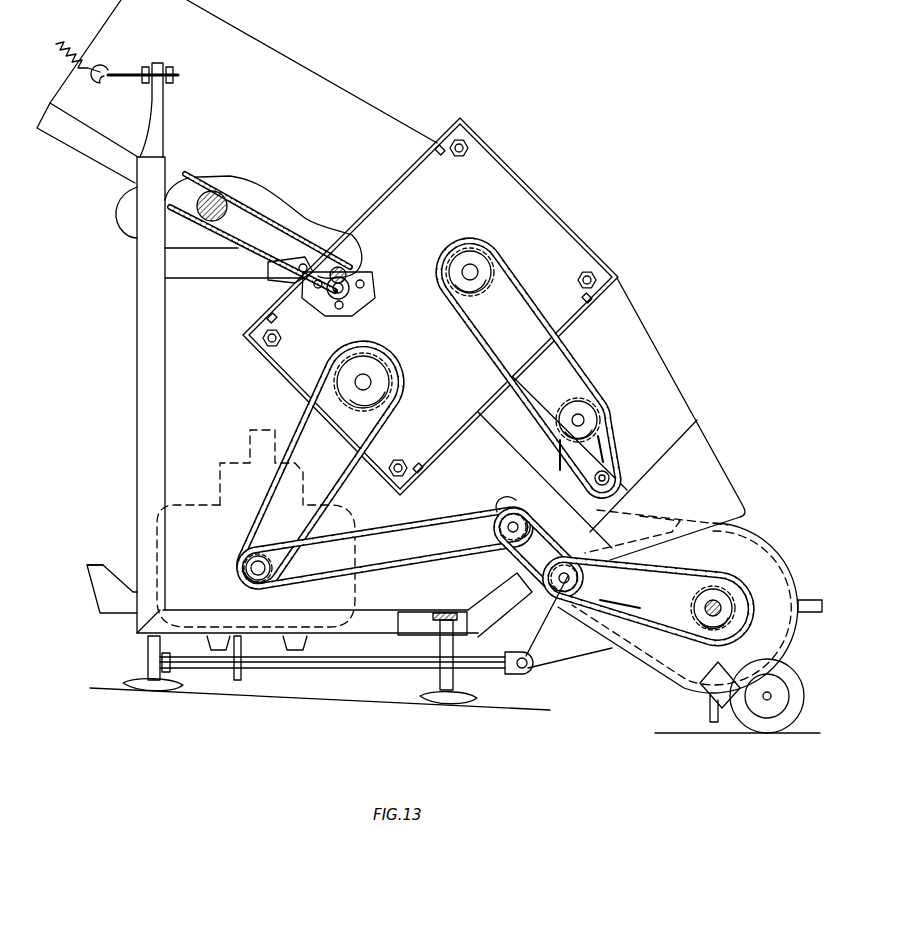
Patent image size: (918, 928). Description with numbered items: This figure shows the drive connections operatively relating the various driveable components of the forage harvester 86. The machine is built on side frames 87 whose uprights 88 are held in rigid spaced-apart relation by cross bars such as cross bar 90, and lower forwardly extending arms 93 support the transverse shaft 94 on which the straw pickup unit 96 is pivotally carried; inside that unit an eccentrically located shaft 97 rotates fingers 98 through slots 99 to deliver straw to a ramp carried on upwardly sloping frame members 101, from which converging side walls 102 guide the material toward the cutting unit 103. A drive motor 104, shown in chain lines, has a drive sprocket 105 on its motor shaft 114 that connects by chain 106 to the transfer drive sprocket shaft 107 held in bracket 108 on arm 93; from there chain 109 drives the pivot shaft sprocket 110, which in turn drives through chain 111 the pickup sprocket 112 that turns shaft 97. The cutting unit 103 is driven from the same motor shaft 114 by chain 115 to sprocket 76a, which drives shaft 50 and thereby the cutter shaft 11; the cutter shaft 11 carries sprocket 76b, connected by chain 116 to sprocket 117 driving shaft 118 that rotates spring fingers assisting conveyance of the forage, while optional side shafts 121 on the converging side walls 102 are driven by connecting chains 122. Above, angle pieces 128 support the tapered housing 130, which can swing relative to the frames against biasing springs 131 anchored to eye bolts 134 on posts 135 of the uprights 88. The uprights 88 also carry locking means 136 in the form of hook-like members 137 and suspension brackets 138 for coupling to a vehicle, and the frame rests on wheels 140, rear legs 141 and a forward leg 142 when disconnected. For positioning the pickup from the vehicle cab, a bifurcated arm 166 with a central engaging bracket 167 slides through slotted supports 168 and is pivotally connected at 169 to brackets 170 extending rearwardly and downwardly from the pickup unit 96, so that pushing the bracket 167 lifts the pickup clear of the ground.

The cutter shaft 11 is at (462, 266).
The shaft 50 is at (367, 384).
The sprocket 76a is at (352, 355).
The sprocket 76b is at (485, 252).
The forage harvester 86 is at (223, 707).
The side frames 87 is at (366, 637).
The uprights 88 is at (137, 462).
The cross bar 90 is at (207, 642).
The lower forwardly extending arms 93 is at (485, 605).
The transverse shaft 94 is at (586, 578).
The straw pickup unit 96 is at (651, 701).
The eccentrically located shaft 97 is at (712, 600).
The fingers 98 is at (806, 600).
The slots 99 is at (790, 648).
The upwardly sloping frame members 101 is at (487, 452).
The converging side walls 102 is at (672, 387).
The cutting unit 103 is at (545, 212).
The drive motor 104 is at (232, 458).
The drive sprocket 105 is at (244, 558).
The chain 106 is at (452, 562).
The transfer drive sprocket shaft 107 is at (512, 525).
The bracket 108 is at (505, 497).
The chain 109 is at (535, 591).
The pivot shaft sprocket 110 is at (562, 601).
The chain 111 is at (617, 623).
The pickup sprocket 112 is at (683, 605).
The motor shaft 114 is at (252, 568).
The chain 115 is at (297, 426).
The chain 116 is at (533, 304).
The sprocket 117 is at (597, 413).
The shaft 118 is at (575, 417).
The side shafts 121 is at (608, 478).
The connecting chains 122 is at (615, 447).
The angle pieces 128 is at (85, 152).
The tapered box structure or housing 130 is at (372, 108).
The biasing springs 131 is at (68, 45).
The eye bolts 134 is at (123, 72).
The posts 135 is at (165, 125).
The locking means 136 is at (100, 554).
The hook-like members 137 is at (97, 605).
The brackets 138 is at (125, 218).
The wheels 140 is at (765, 734).
The rear legs 141 is at (127, 684).
The forward leg 142 is at (432, 690).
The bifurcated arm 166 is at (300, 669).
The engaging bracket 167 is at (152, 660).
The slotted supports 168 is at (242, 672).
The pivotal connection 169 is at (508, 672).
The brackets 170 is at (570, 655).